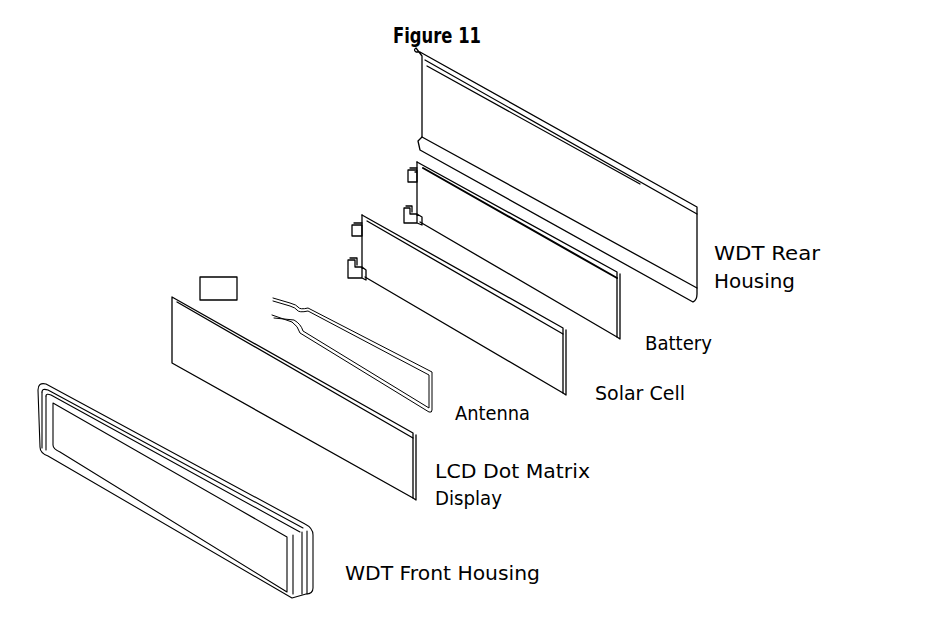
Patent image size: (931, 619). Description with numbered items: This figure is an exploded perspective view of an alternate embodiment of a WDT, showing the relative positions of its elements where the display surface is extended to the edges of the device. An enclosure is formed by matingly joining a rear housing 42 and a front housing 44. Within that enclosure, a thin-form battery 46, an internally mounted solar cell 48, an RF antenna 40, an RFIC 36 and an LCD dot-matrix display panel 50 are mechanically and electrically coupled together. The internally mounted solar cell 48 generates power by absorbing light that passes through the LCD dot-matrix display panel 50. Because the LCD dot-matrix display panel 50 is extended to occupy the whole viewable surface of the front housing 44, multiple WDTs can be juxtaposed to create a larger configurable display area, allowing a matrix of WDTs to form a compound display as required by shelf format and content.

The RFIC 36 is at (220, 288).
The RF antenna 40 is at (330, 318).
The rear housing 42 is at (577, 137).
The front housing 44 is at (290, 516).
The thin-form battery 46 is at (412, 170).
The internally mounted solar cell 48 is at (385, 253).
The LCD dot-matrix display panel 50 is at (208, 358).